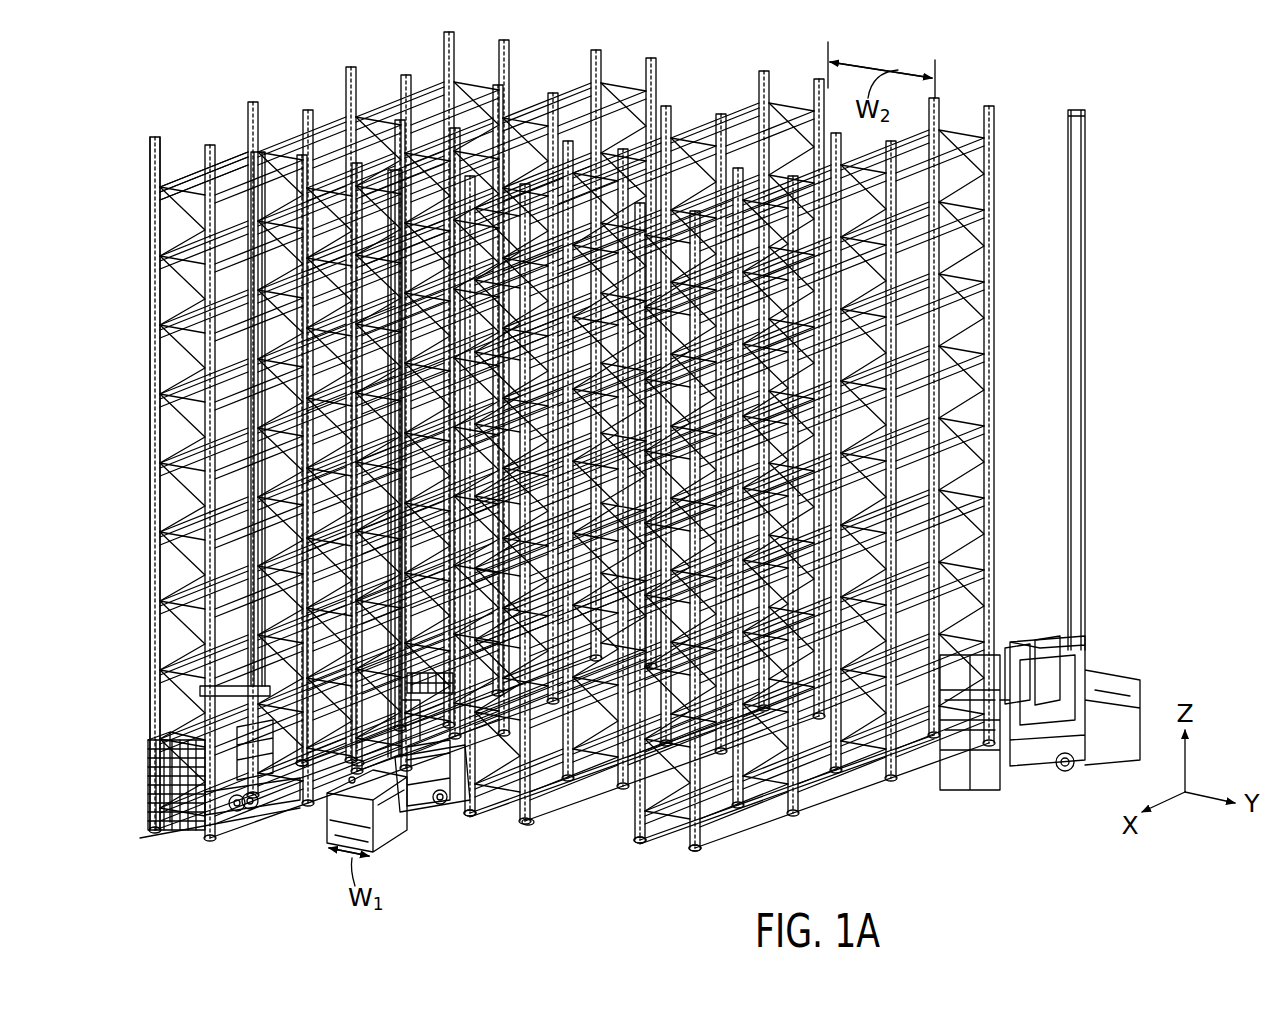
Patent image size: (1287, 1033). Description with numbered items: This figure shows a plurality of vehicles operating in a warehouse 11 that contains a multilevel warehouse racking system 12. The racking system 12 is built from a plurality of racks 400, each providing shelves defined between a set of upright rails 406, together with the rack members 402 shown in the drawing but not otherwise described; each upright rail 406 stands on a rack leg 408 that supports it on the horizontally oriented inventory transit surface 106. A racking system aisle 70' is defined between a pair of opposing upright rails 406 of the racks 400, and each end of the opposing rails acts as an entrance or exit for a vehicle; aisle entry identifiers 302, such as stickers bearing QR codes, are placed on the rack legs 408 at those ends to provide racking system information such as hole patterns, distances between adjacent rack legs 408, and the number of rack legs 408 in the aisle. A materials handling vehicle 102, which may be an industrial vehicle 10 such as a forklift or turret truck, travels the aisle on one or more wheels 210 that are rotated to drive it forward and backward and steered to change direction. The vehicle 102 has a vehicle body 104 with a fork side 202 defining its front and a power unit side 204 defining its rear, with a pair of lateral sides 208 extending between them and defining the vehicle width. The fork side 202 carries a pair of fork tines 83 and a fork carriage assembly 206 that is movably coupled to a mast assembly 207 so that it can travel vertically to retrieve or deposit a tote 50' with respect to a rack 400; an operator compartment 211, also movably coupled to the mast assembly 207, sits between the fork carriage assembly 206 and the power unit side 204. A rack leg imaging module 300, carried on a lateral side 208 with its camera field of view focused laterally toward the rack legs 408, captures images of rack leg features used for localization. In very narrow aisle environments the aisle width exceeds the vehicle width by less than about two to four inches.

The rack 400 is at (180, 118).
The rack beam 402 is at (160, 190).
The upright rail 406 is at (152, 296).
The multilevel warehouse racking system 12 is at (688, 72).
The industrial vehicle 10 is at (1005, 130).
The warehouse 11 is at (1100, 125).
The mast assembly 207 is at (1088, 355).
The operator compartment 211 is at (1057, 628).
The fork carriage assembly 206 is at (1020, 632).
The materials handling vehicle 102 is at (283, 803).
The vehicle body 104 is at (1113, 662).
The power unit side 204 is at (330, 826).
The aisle entry identifier 302 is at (356, 764).
The fork tines 83 is at (150, 835).
The fork side 202 is at (226, 826).
The lateral side 208 is at (324, 806).
The rack leg imaging module 300 is at (441, 802).
The racking system aisle 70' is at (610, 829).
The rack leg 408 is at (702, 816).
The inventory transit surface 106 is at (718, 882).
The tote 50' is at (1035, 781).
The wheel 210 is at (1068, 772).